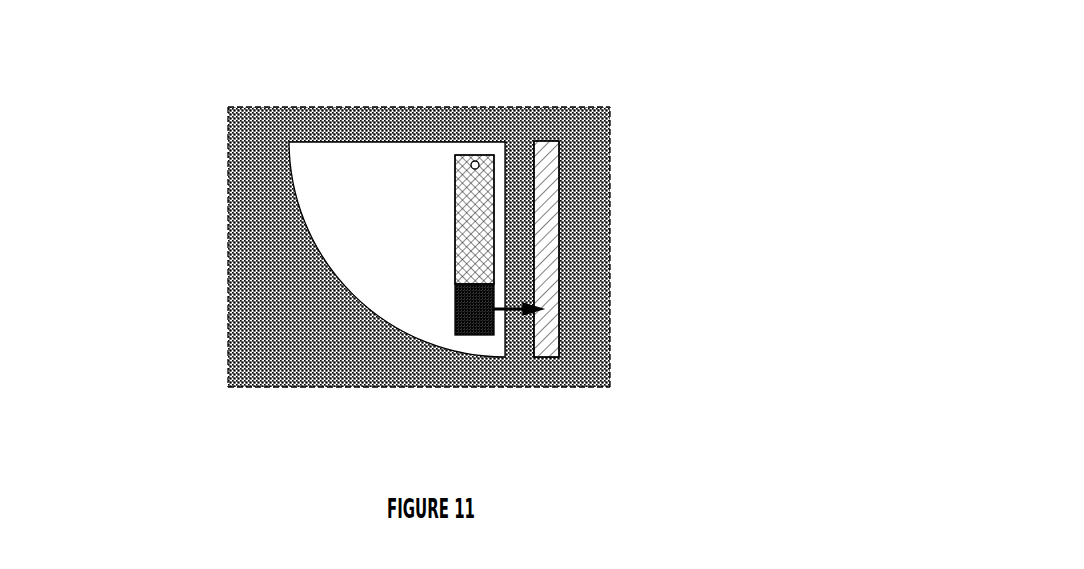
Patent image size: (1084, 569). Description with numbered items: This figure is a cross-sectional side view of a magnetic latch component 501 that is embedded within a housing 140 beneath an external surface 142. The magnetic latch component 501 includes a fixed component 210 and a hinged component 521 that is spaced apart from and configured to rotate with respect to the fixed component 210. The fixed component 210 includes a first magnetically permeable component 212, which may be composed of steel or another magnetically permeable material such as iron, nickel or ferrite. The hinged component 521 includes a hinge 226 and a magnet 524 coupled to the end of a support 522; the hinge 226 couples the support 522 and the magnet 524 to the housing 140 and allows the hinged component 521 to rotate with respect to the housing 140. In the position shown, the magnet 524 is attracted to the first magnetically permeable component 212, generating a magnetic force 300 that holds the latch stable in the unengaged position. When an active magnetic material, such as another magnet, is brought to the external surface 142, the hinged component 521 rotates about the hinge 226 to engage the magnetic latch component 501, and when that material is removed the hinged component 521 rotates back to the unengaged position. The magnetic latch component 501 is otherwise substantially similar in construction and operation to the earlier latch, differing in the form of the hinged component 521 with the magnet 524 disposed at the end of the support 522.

The magnetic latch component 501 is at (180, 162).
The housing 140 is at (597, 122).
The external surface 142 is at (485, 100).
The hinge 226 is at (448, 111).
The fixed component 210 is at (673, 241).
The first magnetically permeable component 212 is at (548, 200).
The magnetic force 300 is at (506, 303).
The hinged component 521 is at (398, 252).
The support 522 is at (470, 258).
The magnet 524 is at (482, 326).